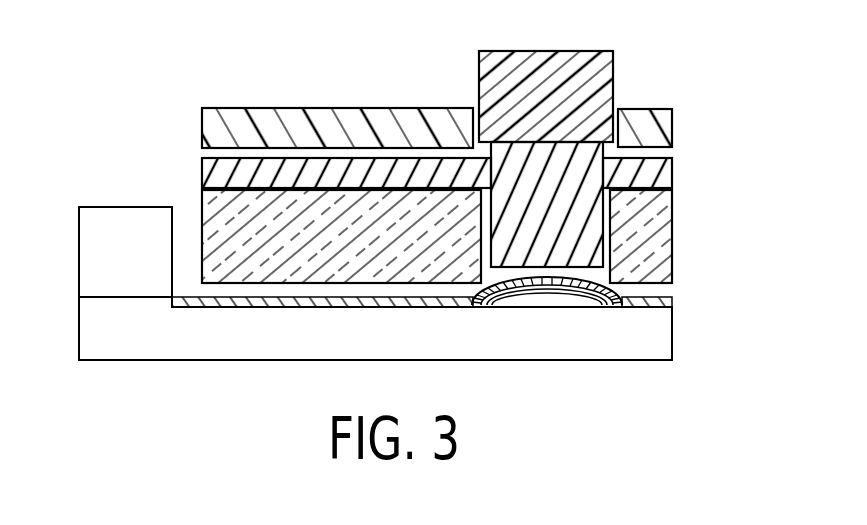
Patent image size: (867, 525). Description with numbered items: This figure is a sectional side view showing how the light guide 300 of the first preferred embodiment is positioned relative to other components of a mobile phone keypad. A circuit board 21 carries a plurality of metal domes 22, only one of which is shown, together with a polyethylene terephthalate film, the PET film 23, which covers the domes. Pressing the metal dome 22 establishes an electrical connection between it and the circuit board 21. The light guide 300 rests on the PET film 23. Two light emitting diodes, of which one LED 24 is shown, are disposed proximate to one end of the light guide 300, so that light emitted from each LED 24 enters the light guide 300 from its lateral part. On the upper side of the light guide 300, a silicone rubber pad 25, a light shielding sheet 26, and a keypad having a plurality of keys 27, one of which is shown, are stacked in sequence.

The circuit board 21 is at (665, 338).
The metal dome 22 is at (553, 295).
The polyethylene terephthalate (PET) film 23 is at (598, 281).
The light emitting diode 24 is at (103, 208).
The silicone rubber pad 25 is at (663, 173).
The light shielding sheet 26 is at (667, 113).
The key 27 is at (592, 58).
The light guide 300 is at (667, 210).